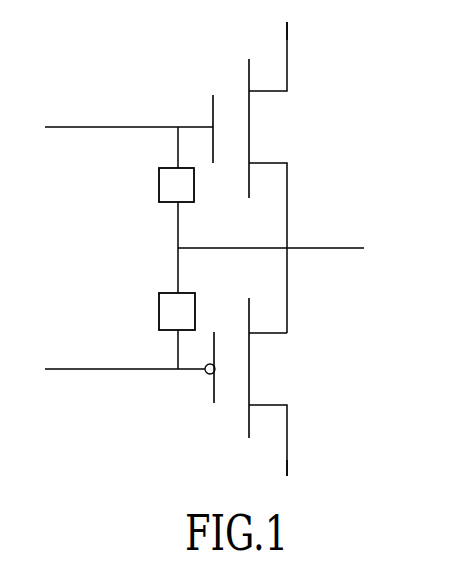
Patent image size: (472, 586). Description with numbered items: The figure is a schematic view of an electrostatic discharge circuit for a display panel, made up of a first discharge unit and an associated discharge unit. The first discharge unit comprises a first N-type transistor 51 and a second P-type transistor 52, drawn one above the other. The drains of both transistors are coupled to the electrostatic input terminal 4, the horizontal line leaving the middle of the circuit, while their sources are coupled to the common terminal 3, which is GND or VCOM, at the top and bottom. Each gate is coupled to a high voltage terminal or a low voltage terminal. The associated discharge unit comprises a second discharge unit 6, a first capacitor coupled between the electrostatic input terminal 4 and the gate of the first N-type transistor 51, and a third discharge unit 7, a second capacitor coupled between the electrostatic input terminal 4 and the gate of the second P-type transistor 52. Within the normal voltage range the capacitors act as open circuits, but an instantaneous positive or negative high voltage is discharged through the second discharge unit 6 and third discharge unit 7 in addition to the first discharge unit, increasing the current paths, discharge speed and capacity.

The common terminal 3 is at (288, 48).
The electrostatic input terminal 4 is at (334, 247).
The second discharge unit 6 is at (177, 185).
The third discharge unit 7 is at (183, 310).
The first N-type transistor 51 is at (233, 118).
The second P-type transistor 52 is at (238, 398).